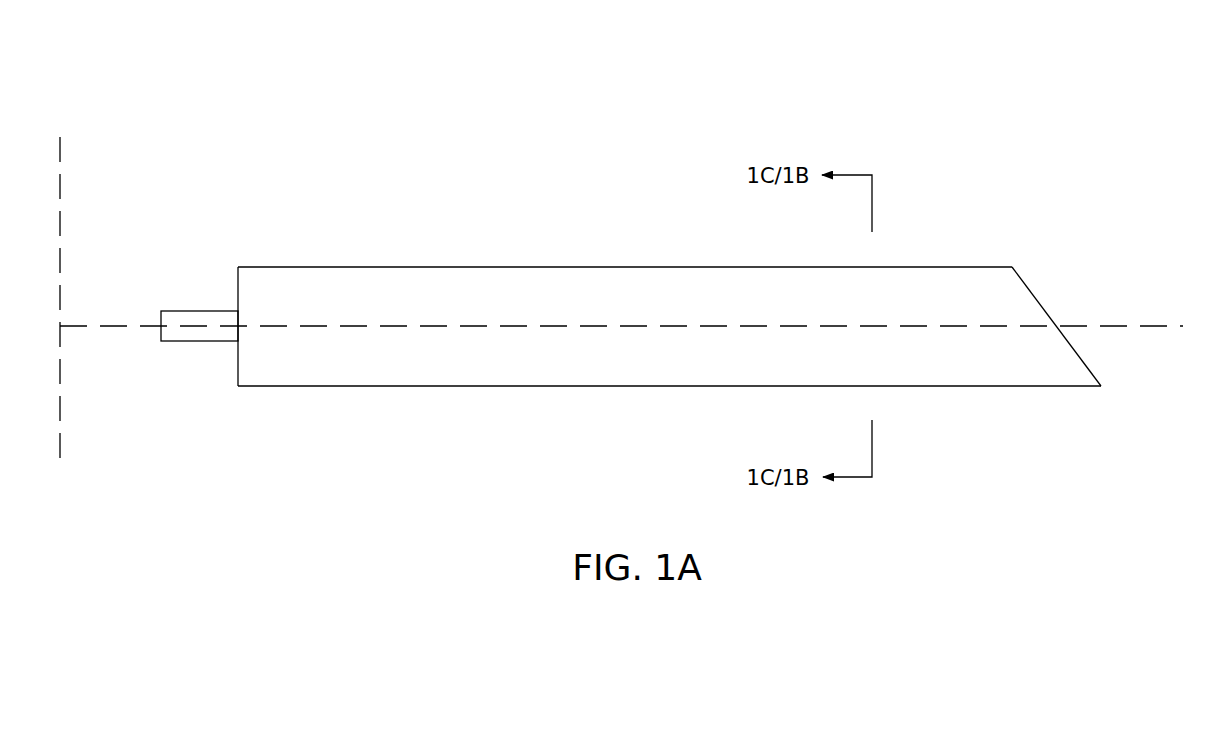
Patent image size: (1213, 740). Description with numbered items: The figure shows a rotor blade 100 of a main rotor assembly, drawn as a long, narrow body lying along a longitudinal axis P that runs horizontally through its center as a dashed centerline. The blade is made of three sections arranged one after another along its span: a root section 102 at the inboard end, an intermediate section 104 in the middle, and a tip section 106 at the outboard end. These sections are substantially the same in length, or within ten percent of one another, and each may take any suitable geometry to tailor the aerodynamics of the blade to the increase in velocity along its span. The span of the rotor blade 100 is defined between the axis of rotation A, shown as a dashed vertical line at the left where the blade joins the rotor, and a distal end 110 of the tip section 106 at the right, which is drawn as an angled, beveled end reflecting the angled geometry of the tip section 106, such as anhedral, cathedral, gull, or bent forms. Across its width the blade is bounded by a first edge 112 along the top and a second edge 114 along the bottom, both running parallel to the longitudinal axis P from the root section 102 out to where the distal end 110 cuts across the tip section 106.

The rotor blade 100 is at (715, 92).
The root section 102 is at (292, 252).
The intermediate section 104 is at (602, 252).
The tip section 106 is at (988, 252).
The distal end 110 is at (1082, 357).
The first edge 112 is at (468, 267).
The second edge 114 is at (458, 386).
The axis of rotation A is at (62, 327).
The longitudinal axis P is at (572, 327).